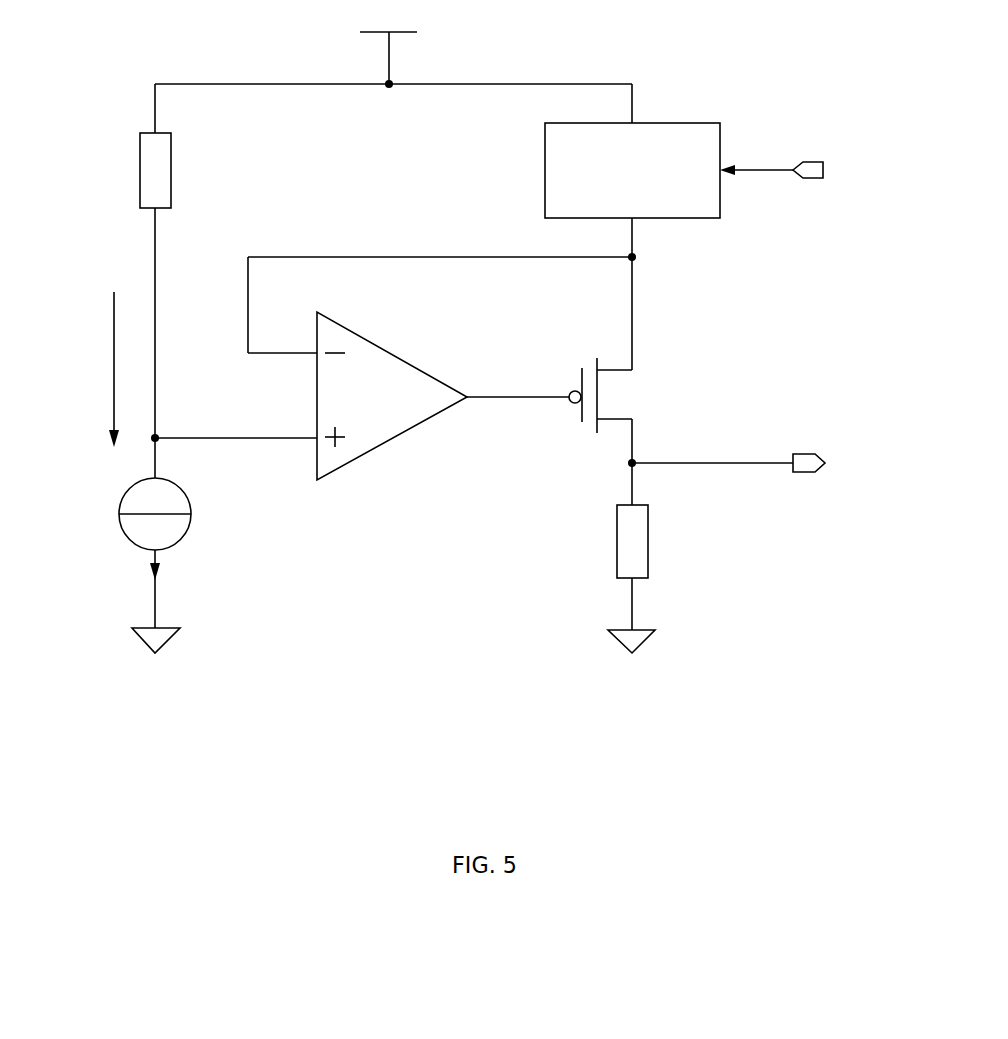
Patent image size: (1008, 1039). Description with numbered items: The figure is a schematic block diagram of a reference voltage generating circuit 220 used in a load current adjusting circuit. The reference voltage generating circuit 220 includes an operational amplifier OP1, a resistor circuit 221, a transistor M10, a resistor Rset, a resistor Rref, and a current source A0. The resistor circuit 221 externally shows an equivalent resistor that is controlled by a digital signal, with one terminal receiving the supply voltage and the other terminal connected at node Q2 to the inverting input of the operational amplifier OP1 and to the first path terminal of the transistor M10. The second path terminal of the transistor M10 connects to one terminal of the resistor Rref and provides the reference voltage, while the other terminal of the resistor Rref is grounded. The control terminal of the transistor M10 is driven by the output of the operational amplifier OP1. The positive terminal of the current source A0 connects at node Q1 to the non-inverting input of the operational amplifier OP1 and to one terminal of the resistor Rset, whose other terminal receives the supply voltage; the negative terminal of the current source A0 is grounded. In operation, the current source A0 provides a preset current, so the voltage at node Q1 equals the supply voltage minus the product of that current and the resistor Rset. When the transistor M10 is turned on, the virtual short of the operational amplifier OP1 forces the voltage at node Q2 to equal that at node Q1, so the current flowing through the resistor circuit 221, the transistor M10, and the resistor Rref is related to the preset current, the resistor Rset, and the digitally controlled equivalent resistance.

The reference voltage generating circuit 220 is at (463, 362).
The resistor circuit 221 is at (652, 200).
The resistor Rset is at (123, 170).
The resistor Rref is at (597, 541).
The operational amplifier OP1 is at (392, 396).
The transistor M10 is at (633, 395).
The current source A0 is at (126, 514).
The node Q1 is at (179, 418).
The node Q2 is at (662, 260).